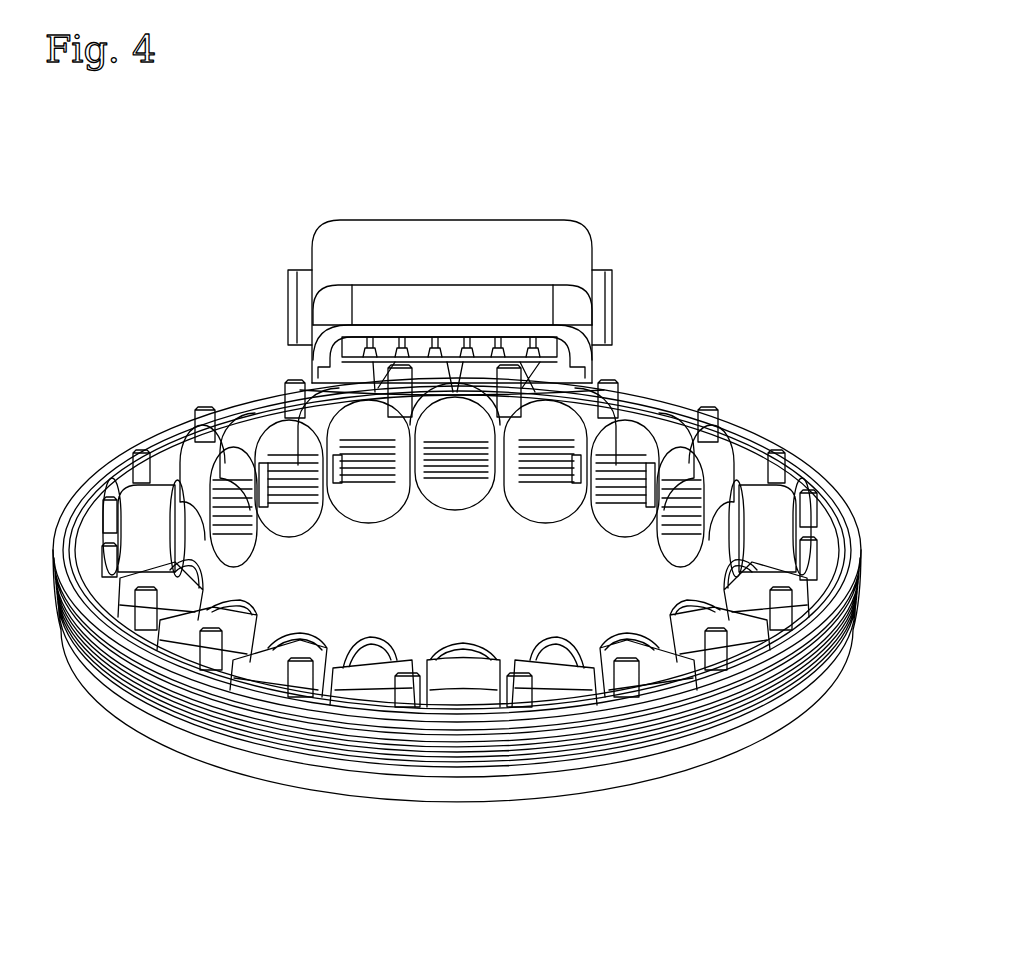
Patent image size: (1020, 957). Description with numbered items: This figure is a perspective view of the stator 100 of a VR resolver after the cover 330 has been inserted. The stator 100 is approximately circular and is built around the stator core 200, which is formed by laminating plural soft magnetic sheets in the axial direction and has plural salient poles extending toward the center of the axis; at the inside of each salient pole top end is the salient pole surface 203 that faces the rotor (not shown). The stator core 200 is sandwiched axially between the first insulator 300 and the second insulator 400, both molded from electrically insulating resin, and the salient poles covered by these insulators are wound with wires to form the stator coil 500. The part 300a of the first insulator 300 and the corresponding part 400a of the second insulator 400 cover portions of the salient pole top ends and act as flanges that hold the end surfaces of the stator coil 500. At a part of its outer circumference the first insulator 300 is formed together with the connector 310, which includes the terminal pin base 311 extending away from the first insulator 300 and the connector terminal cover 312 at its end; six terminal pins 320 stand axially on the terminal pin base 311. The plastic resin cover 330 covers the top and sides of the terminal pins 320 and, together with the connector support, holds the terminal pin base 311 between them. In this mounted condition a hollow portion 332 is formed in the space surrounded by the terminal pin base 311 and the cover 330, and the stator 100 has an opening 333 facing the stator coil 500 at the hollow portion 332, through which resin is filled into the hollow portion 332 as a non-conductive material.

The stator 100 is at (52, 818).
The stator core 200 is at (836, 490).
The salient pole surface 203 is at (298, 480).
The first insulator 300 is at (93, 550).
The part of the first insulator 300a is at (283, 452).
The connector 310 is at (310, 163).
The terminal pin base 311 is at (350, 352).
The connector terminal cover 312 is at (450, 230).
The terminal pins 320 is at (502, 350).
The cover 330 is at (381, 293).
The hollow portion 332 is at (548, 351).
The opening 333 is at (335, 357).
The second insulator 400 is at (737, 745).
The part of the second insulator 400a is at (290, 515).
The stator coil 500 is at (650, 415).